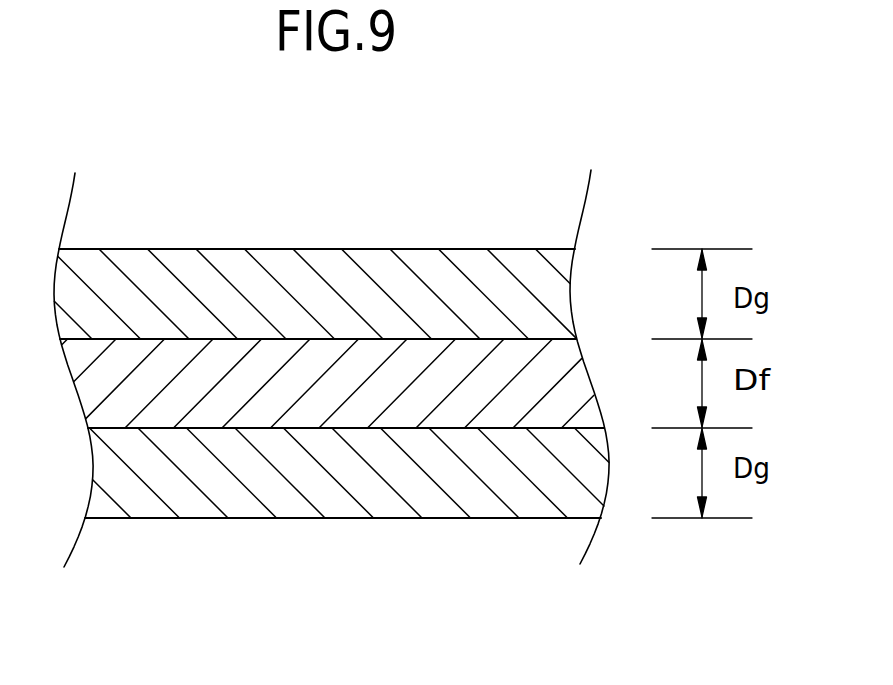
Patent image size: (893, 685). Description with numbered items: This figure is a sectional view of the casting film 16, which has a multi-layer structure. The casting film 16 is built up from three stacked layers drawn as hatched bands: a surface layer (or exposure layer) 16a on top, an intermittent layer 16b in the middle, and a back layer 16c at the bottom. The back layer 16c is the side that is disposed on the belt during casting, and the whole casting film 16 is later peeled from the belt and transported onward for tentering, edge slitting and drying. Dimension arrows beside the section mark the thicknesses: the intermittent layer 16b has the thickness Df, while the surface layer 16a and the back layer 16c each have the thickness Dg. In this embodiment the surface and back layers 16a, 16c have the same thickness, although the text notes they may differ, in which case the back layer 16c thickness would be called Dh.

The casting film 16 is at (331, 371).
The surface layer 16a is at (366, 249).
The intermittent layer 16b is at (272, 408).
The back layer 16c is at (193, 518).